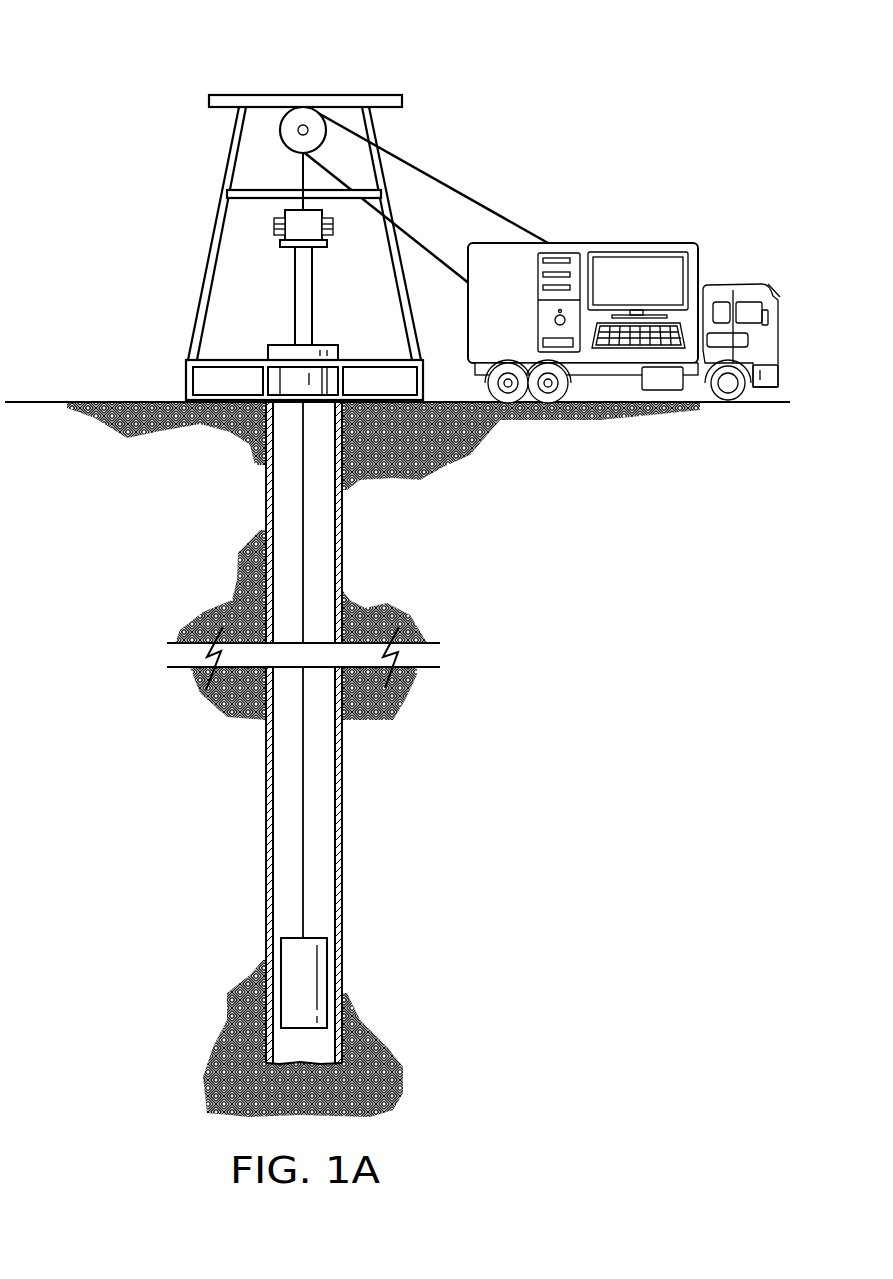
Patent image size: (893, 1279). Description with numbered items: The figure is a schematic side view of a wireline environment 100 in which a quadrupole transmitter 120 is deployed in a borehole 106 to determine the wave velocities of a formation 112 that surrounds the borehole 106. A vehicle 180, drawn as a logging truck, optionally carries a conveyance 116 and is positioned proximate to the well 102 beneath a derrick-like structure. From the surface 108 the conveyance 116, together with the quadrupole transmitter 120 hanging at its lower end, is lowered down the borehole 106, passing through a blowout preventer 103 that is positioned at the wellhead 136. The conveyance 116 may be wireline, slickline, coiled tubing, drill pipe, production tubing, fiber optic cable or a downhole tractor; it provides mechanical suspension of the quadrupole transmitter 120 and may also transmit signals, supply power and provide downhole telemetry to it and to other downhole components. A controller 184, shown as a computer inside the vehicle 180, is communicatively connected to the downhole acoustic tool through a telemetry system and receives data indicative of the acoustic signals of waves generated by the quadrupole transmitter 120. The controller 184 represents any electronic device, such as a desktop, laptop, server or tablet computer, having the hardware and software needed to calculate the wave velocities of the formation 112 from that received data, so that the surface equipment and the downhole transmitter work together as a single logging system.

The wireline environment 100 is at (121, 58).
The well 102 is at (334, 335).
The blowout preventer 103 is at (295, 280).
The borehole 106 is at (340, 552).
The surface 108 is at (122, 400).
The formation 112 is at (490, 879).
The conveyance 116 is at (303, 892).
The quadrupole transmitter 120 is at (327, 978).
The wellhead 136 is at (280, 345).
The vehicle 180 is at (617, 243).
The controller 184 is at (560, 253).